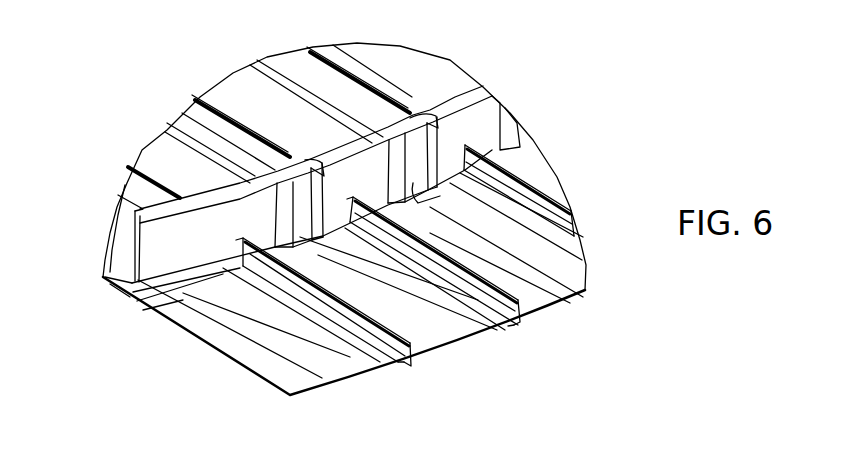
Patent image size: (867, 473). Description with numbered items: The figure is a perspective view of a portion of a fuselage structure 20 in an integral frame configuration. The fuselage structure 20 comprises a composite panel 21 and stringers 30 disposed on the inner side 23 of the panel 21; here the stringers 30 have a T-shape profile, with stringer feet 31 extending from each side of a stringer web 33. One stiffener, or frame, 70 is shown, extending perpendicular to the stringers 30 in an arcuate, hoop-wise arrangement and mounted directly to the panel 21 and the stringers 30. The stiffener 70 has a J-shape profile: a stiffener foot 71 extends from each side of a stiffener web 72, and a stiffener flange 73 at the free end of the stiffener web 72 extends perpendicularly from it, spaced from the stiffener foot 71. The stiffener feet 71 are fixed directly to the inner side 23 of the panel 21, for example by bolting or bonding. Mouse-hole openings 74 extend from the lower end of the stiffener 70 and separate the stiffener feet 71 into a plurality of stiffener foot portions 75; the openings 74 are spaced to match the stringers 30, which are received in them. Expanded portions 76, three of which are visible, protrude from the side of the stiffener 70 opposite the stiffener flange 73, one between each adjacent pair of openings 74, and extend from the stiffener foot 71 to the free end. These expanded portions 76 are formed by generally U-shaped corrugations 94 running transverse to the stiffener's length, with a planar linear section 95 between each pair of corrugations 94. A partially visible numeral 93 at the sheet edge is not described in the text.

The fuselage structure 20 is at (598, 108).
The panel 21 is at (253, 350).
The inner side 23 is at (550, 293).
The stringers 30 is at (497, 327).
The stringer feet 31 is at (415, 360).
The stringer web 33 is at (497, 296).
The stiffener 70 is at (493, 117).
The stiffener foot 71 is at (113, 283).
The stiffener web 72 is at (98, 253).
The stiffener flange 73 is at (147, 203).
The openings 74 is at (243, 257).
The stiffener foot portions 75 is at (327, 255).
The expanded portions 76 is at (413, 146).
The member 93 is at (729, 464).
The corrugations 94 is at (418, 187).
The linear section 95 is at (335, 167).